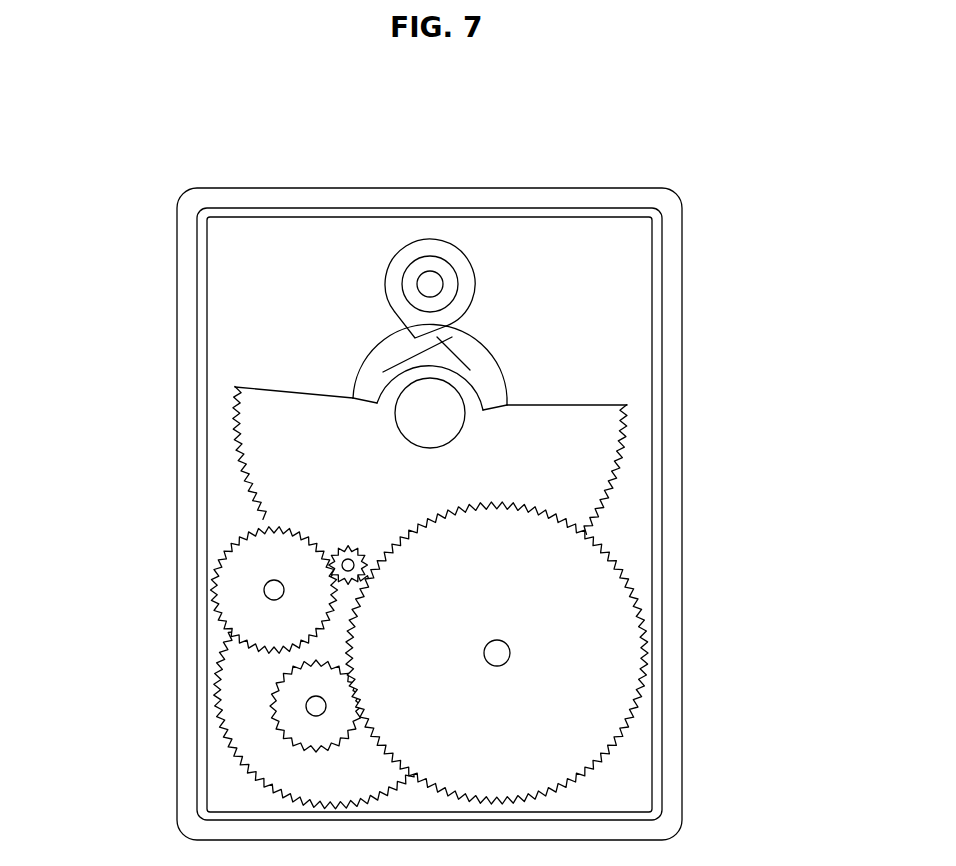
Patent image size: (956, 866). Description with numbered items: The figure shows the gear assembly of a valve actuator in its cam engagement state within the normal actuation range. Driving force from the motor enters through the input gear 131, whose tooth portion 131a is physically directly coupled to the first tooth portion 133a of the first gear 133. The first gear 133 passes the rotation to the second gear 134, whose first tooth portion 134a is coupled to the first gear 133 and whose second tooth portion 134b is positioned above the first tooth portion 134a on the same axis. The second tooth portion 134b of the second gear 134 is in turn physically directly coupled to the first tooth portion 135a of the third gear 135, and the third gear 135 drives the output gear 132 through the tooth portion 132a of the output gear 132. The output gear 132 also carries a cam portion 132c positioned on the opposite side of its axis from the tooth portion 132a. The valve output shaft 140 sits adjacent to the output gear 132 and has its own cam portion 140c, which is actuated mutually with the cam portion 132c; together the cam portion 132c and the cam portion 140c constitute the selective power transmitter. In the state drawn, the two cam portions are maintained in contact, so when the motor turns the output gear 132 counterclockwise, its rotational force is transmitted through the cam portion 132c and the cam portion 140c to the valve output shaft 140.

The valve output shaft 140 is at (268, 224).
The cam portion 140c is at (420, 327).
The output gear 132 is at (516, 419).
The tooth portion 132a is at (625, 472).
The cam portion 132c is at (442, 350).
The input gear 131 is at (221, 528).
The tooth portion 131a is at (342, 552).
The first gear 133 is at (200, 590).
The first tooth portion 133a is at (217, 617).
The second gear 134 is at (257, 690).
The first tooth portion 134a is at (217, 687).
The second tooth portion 134b is at (283, 743).
The third gear 135 is at (577, 653).
The first tooth portion 135a is at (642, 607).